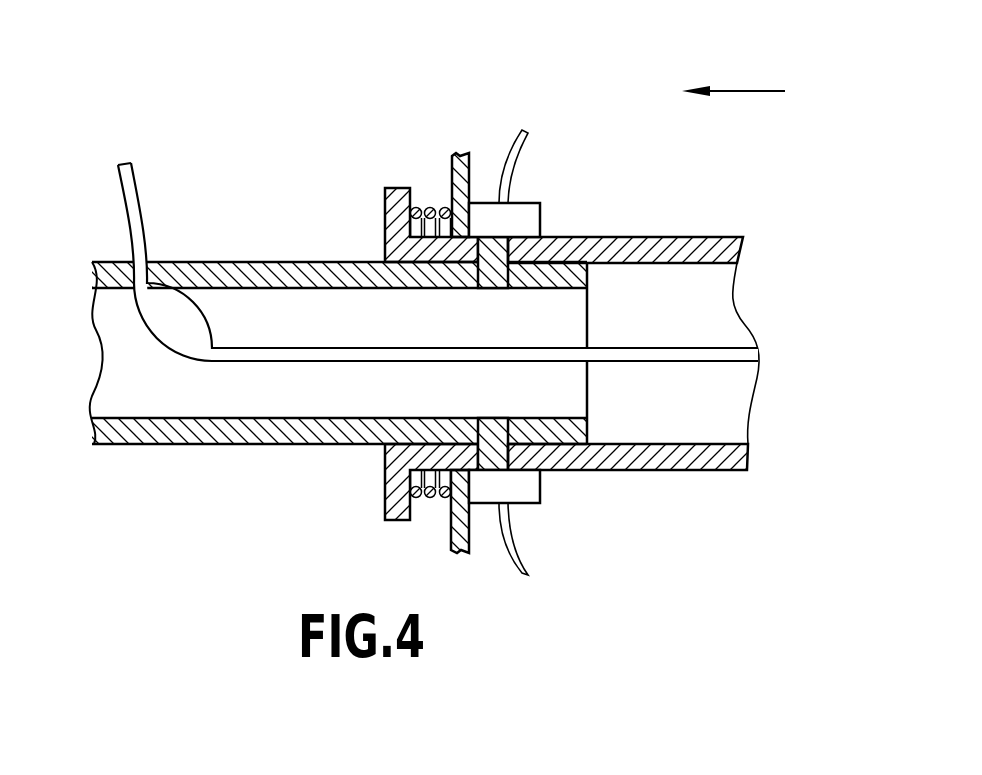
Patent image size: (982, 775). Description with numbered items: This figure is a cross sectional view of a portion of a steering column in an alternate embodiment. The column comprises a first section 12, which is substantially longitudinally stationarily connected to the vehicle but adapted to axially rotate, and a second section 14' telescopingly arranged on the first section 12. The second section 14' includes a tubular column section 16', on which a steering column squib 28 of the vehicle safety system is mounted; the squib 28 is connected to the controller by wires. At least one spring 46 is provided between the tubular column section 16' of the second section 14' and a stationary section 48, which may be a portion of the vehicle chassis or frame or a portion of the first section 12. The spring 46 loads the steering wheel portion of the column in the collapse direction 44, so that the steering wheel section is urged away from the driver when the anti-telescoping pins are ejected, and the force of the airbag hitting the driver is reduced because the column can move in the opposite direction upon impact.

The first section 12 is at (194, 445).
The second section 14' is at (626, 185).
The tubular column section 16' is at (628, 491).
The steering column squib 28 is at (541, 203).
The collapse direction 44 is at (745, 90).
The spring 46 is at (428, 212).
The stationary section 48 is at (465, 153).